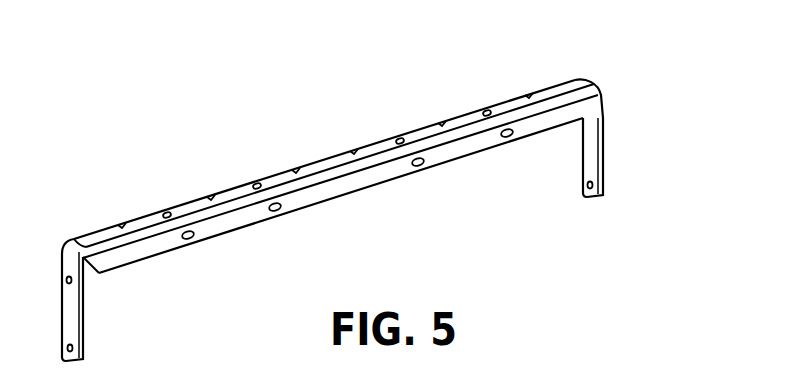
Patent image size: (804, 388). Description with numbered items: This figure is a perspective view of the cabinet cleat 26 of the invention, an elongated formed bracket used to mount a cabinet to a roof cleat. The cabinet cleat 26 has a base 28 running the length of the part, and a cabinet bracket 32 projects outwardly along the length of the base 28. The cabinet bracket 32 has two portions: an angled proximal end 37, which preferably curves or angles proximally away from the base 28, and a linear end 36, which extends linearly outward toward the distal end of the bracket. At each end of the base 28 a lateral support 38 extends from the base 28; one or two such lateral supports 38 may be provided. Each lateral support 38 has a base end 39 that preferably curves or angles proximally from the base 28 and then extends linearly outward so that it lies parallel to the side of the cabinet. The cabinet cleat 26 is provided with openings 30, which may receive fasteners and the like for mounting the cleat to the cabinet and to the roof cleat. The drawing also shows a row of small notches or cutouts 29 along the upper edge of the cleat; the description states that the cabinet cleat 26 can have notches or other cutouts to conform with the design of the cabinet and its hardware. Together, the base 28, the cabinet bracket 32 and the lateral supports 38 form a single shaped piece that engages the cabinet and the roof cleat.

The cabinet cleat 26 is at (95, 238).
The base 28 is at (498, 106).
The notch 29 is at (297, 172).
The openings 30 is at (167, 213).
The cabinet bracket 32 is at (371, 178).
The linear end 36 is at (530, 137).
The angled proximal end 37 is at (596, 90).
The lateral supports 38 is at (604, 152).
The base ends 39 is at (83, 257).